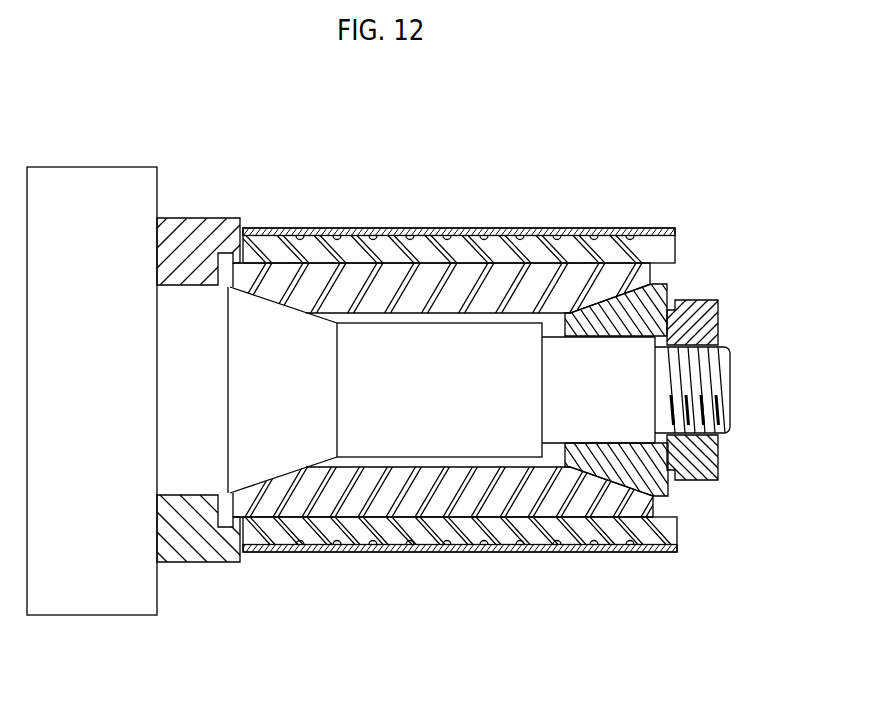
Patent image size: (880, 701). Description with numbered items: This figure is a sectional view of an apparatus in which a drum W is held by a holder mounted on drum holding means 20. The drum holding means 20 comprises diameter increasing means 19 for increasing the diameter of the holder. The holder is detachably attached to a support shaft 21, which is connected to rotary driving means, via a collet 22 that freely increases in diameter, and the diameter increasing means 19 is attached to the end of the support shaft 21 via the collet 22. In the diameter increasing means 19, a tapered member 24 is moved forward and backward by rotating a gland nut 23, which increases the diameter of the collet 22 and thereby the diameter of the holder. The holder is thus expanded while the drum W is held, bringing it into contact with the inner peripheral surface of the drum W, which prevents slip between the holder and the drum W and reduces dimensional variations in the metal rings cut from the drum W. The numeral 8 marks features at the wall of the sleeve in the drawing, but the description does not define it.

The drum holding means 20 is at (530, 138).
The support shaft 21 is at (458, 430).
The collet 22 is at (391, 287).
The drum W is at (620, 228).
The loops of winding 8 is at (447, 238).
The tapered member 24 is at (655, 312).
The gland nut 23 is at (695, 322).
The diameter increasing means 19 is at (688, 283).